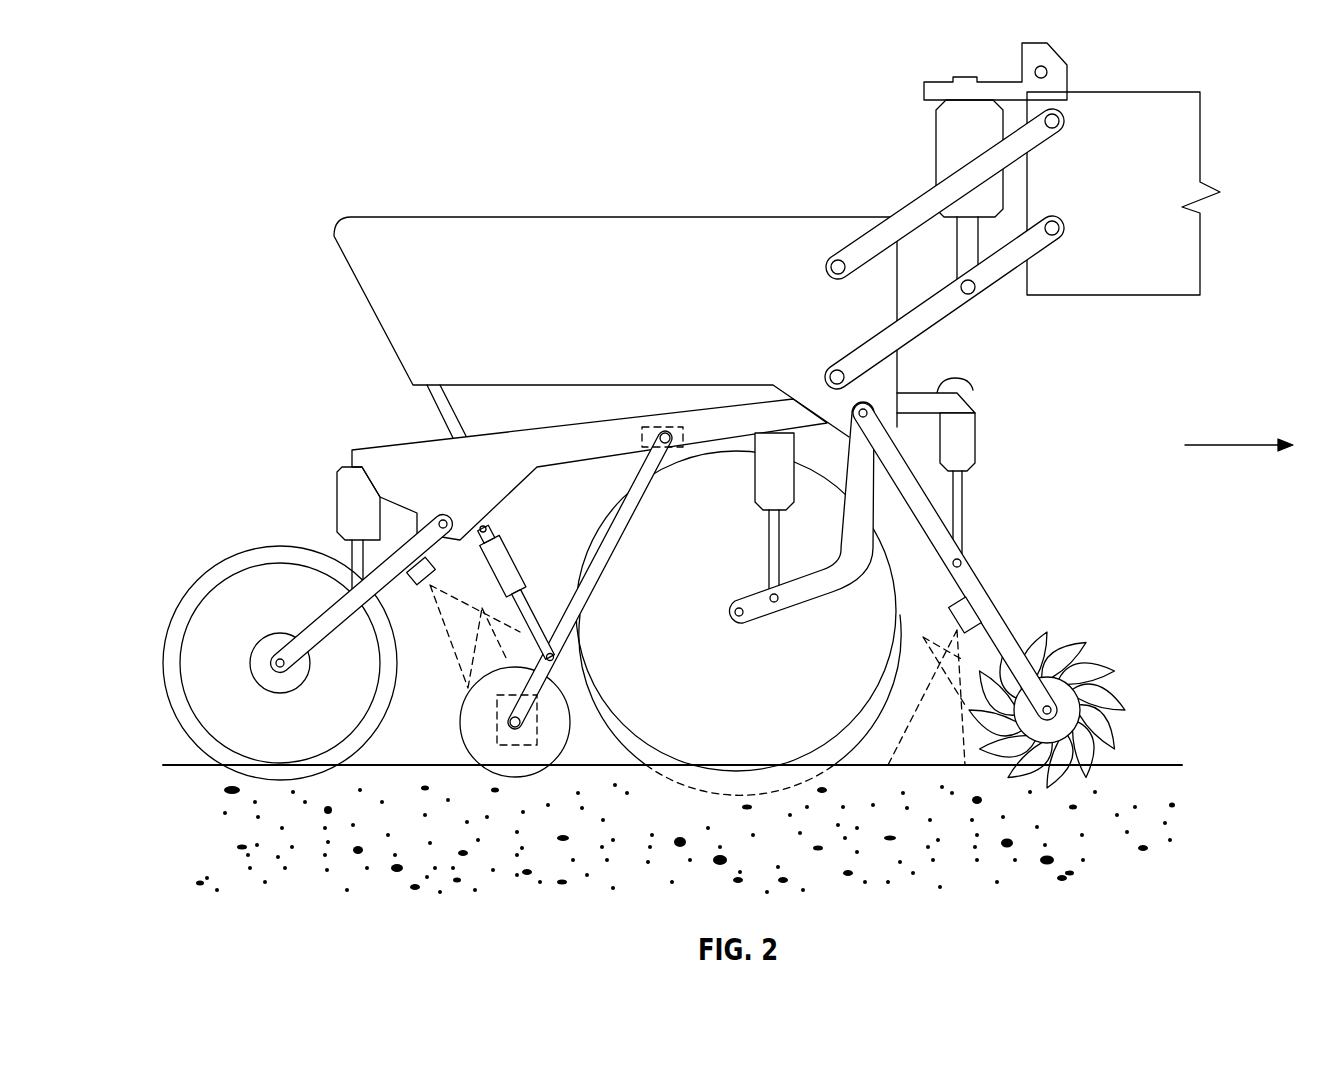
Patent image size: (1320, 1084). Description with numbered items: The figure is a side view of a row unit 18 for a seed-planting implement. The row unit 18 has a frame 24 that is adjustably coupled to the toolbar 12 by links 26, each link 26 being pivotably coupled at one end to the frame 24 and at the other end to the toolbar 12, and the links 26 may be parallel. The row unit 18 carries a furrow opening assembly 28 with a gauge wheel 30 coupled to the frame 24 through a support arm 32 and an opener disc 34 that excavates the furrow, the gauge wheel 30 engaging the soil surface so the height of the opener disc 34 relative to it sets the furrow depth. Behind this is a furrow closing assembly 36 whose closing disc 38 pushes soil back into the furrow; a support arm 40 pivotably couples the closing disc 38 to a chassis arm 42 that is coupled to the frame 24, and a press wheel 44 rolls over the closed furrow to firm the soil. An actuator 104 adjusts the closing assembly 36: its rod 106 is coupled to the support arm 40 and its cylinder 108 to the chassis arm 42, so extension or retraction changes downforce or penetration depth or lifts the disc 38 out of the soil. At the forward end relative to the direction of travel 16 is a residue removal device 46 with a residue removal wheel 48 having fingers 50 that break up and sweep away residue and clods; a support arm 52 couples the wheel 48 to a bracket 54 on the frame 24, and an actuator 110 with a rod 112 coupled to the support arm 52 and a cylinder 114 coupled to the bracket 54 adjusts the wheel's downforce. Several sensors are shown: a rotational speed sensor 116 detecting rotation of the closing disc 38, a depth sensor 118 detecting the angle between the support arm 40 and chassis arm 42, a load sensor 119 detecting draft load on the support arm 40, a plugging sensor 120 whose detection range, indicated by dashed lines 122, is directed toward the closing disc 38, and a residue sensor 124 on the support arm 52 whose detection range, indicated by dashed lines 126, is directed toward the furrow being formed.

The toolbar 12 is at (1092, 298).
The direction of travel 16 is at (1232, 447).
The row unit 18 is at (424, 138).
The frame 24 is at (640, 216).
The links 26 is at (1037, 152).
The furrow opening assembly 28 is at (920, 688).
The gauge wheel 30 is at (738, 611).
The support arm 32 is at (782, 603).
The opener disc 34 is at (676, 788).
The furrow closing assembly 36 is at (537, 558).
The closing disc 38 is at (462, 752).
The support arm 40 is at (576, 643).
The chassis arm 42 is at (388, 448).
The press wheel 44 is at (165, 670).
The residue removal device 46 is at (1022, 545).
The residue removal wheel 48 is at (1056, 709).
The fingers 50 is at (1088, 664).
The support arm 52 is at (992, 616).
The bracket 54 is at (936, 395).
The actuator 104 is at (514, 546).
The rod 106 is at (570, 612).
The cylinder 108 is at (490, 526).
The actuator 110 is at (1016, 485).
The rod 112 is at (962, 527).
The cylinder 114 is at (977, 440).
The rotational speed sensor 116 is at (548, 738).
The depth sensor 118 is at (673, 423).
The load sensor 119 is at (550, 652).
The plugging sensor 120 is at (408, 586).
The dashed lines 122 is at (462, 610).
The residue sensor 124 is at (958, 607).
The dashed lines 126 is at (926, 685).